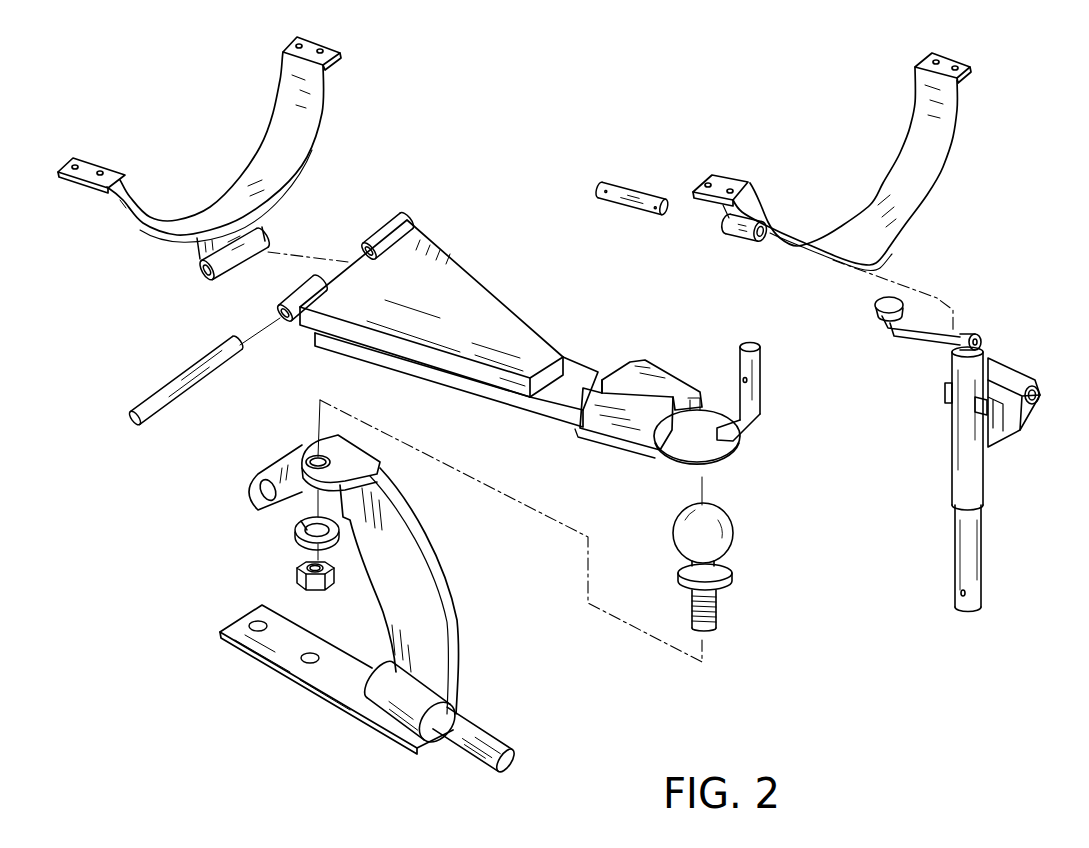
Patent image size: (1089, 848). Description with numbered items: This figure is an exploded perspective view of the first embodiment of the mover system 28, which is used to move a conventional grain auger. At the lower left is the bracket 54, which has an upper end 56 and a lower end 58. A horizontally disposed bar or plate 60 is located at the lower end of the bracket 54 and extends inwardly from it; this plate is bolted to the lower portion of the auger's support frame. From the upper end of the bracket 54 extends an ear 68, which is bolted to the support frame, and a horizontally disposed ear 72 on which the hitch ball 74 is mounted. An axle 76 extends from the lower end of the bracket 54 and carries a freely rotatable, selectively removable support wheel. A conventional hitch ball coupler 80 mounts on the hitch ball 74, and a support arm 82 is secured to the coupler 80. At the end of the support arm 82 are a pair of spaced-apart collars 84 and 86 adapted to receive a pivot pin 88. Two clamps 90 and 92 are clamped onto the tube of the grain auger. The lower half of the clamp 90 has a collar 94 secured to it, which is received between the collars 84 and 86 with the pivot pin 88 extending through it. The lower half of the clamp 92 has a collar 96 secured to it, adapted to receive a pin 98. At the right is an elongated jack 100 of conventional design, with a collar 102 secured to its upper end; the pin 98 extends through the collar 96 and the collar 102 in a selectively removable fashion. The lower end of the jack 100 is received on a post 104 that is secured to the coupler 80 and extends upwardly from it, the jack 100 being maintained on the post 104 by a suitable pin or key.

The mover system 28 is at (470, 185).
The bracket 54 is at (467, 628).
The upper end 56 is at (292, 435).
The lower end 58 is at (336, 689).
The plate 60 is at (322, 678).
The ear 68 is at (250, 492).
The ear 72 is at (353, 458).
The hitch ball 74 is at (715, 530).
The axle 76 is at (485, 740).
The hitch ball coupler 80 is at (600, 383).
The support arm 82 is at (468, 323).
The collar 84 is at (282, 291).
The collar 86 is at (402, 222).
The pivot pin 88 is at (187, 373).
The clamp 90 is at (226, 138).
The clamp 92 is at (862, 163).
The collar 94 is at (270, 247).
The collar 96 is at (738, 240).
The pin 98 is at (622, 190).
The jack 100 is at (938, 440).
The collar 102 is at (1040, 390).
The post 104 is at (762, 363).